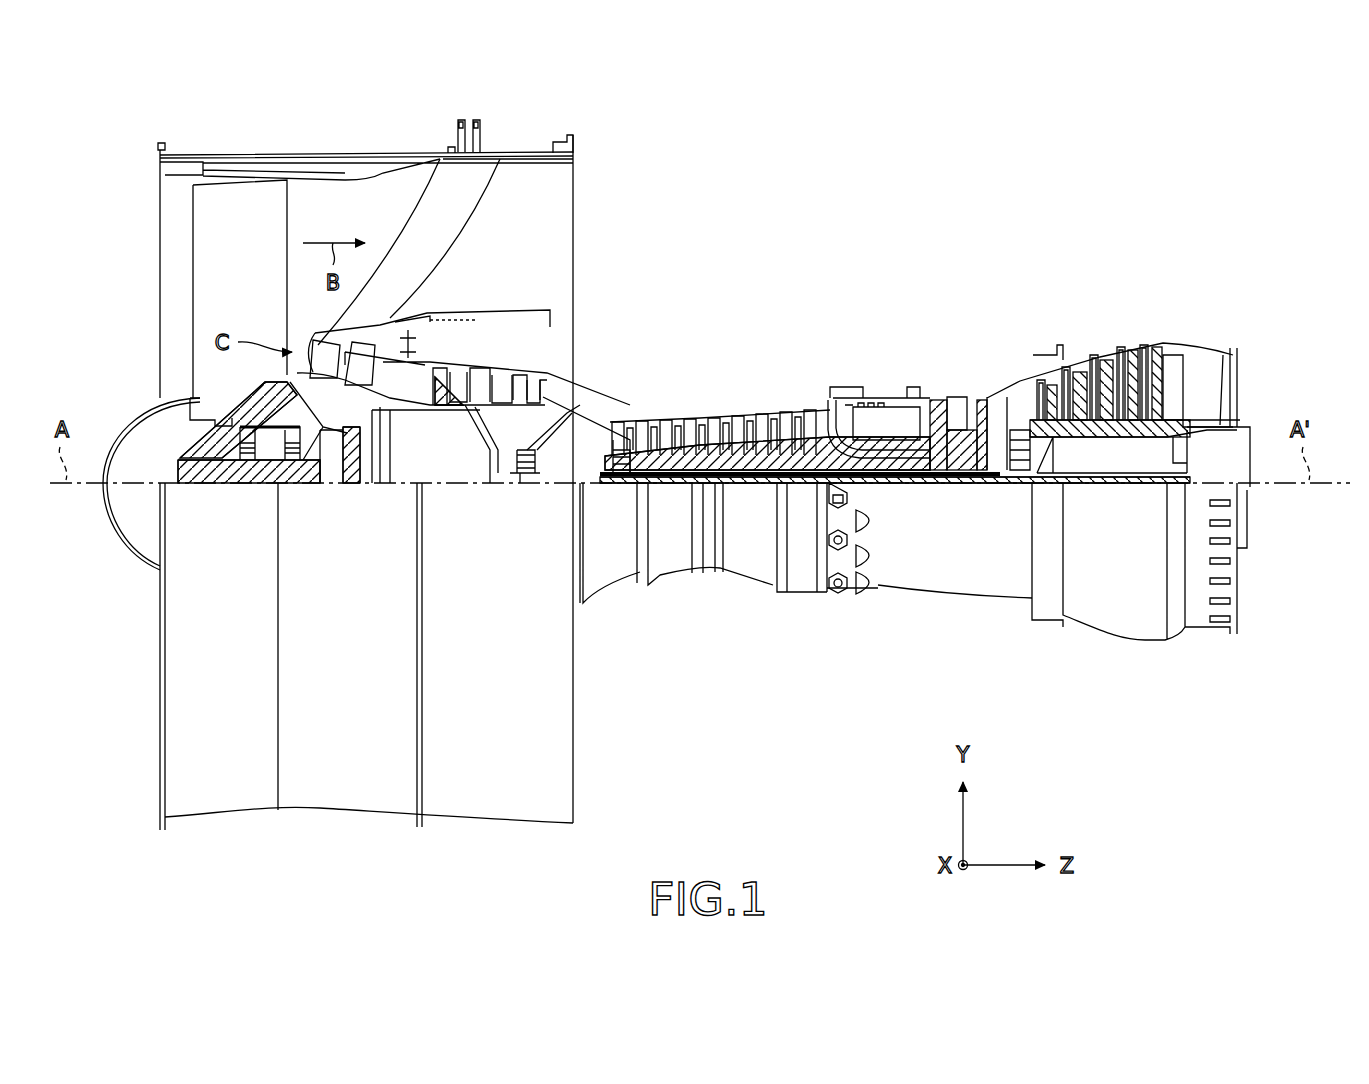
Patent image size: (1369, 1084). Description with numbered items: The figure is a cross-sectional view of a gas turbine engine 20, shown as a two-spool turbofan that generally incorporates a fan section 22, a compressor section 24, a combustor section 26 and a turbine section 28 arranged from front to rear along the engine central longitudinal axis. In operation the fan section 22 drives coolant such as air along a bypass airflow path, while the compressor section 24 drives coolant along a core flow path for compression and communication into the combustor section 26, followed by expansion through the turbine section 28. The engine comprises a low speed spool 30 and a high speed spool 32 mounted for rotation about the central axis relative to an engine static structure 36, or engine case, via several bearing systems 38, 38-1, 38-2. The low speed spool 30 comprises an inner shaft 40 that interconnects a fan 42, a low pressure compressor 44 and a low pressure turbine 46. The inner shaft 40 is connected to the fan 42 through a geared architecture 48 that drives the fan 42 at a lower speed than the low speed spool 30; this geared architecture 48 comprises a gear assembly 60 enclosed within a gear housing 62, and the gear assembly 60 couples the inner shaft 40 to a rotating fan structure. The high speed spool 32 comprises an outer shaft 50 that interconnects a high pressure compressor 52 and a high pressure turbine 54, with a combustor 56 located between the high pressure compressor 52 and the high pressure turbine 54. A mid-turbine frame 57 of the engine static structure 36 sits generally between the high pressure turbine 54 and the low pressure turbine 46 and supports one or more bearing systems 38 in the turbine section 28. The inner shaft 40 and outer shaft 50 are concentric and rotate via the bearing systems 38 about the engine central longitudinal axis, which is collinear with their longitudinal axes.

The gas turbine engine 20 is at (944, 186).
The fan section 22 is at (415, 130).
The compressor section 24 is at (425, 273).
The combustor section 26 is at (821, 273).
The turbine section 28 is at (1172, 273).
The low speed spool 30 is at (752, 500).
The high speed spool 32 is at (797, 455).
The engine static structure 36 is at (800, 578).
The bearing system 38 is at (990, 470).
The bearing system 38-1 is at (250, 466).
The bearing system 38-2 is at (525, 482).
The inner shaft 40 is at (605, 490).
The fan 42 is at (222, 289).
The low pressure compressor 44 is at (500, 372).
The low pressure turbine 46 is at (1100, 362).
The geared architecture 48 is at (381, 510).
The outer shaft 50 is at (888, 473).
The high pressure compressor 52 is at (738, 455).
The high pressure turbine 54 is at (960, 395).
The combustor 56 is at (877, 415).
The mid-turbine frame 57 is at (1005, 395).
The gear assembly 60 is at (392, 470).
The gear housing 62 is at (383, 437).